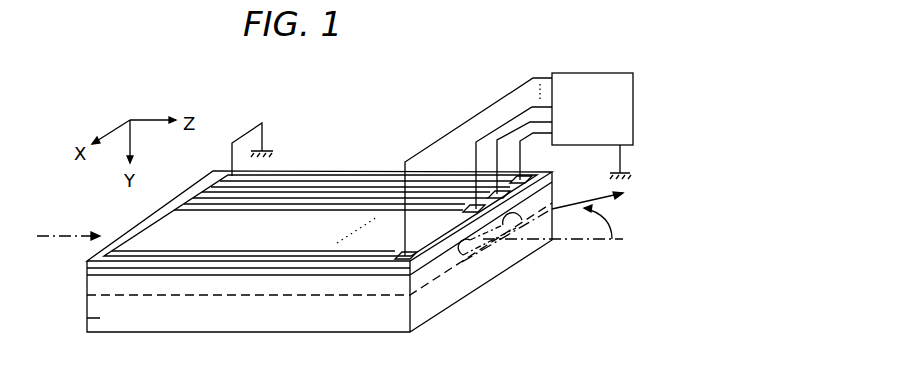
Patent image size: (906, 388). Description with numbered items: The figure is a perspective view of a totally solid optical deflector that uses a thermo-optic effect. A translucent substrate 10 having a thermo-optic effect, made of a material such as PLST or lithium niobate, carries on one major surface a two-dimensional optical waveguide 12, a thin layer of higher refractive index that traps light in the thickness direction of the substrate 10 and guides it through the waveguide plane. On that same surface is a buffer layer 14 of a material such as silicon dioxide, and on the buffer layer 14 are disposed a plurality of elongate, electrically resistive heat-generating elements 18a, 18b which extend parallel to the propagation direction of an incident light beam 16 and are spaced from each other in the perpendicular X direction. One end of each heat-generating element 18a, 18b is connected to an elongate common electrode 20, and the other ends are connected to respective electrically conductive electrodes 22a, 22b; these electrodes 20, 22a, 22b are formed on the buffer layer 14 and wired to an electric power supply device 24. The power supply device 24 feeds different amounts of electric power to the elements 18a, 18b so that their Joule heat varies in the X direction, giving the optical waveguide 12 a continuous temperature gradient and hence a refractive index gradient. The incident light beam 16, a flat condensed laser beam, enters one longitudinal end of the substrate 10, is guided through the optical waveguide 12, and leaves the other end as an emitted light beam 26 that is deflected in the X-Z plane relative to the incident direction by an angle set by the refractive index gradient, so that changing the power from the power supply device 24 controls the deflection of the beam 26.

The translucent substrate 10 is at (86, 322).
The two-dimensional optical waveguide 12 is at (97, 285).
The buffer layer 14 is at (88, 268).
The incident light beam 16 is at (80, 234).
The heat-generating element 18a is at (362, 176).
The heat-generating element 18b is at (292, 188).
The common electrode 20 is at (183, 208).
The electrically conductive electrode 22a is at (529, 172).
The electrically conductive electrode 22b is at (491, 192).
The electric power supply device 24 is at (578, 82).
The emitted light beam 26 is at (608, 218).